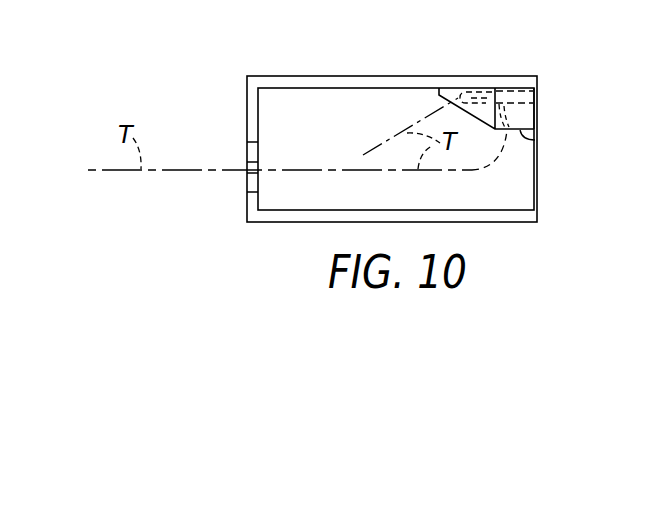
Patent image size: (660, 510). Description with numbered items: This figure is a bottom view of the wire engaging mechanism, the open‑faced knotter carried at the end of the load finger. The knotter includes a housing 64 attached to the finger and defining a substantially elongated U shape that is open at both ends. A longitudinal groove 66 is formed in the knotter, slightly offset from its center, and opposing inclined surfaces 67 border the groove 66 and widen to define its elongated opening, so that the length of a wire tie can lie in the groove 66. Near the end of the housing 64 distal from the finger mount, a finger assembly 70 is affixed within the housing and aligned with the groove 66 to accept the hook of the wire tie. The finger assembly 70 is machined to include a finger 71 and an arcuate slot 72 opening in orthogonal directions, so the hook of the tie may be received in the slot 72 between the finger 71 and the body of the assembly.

The housing 64 is at (352, 76).
The longitudinal groove 66 is at (253, 167).
The inclined surfaces 67 is at (253, 152).
The finger assembly 70 is at (546, 112).
The finger 71 is at (540, 141).
The arcuate slot 72 is at (524, 93).